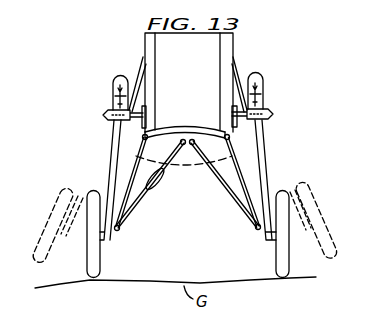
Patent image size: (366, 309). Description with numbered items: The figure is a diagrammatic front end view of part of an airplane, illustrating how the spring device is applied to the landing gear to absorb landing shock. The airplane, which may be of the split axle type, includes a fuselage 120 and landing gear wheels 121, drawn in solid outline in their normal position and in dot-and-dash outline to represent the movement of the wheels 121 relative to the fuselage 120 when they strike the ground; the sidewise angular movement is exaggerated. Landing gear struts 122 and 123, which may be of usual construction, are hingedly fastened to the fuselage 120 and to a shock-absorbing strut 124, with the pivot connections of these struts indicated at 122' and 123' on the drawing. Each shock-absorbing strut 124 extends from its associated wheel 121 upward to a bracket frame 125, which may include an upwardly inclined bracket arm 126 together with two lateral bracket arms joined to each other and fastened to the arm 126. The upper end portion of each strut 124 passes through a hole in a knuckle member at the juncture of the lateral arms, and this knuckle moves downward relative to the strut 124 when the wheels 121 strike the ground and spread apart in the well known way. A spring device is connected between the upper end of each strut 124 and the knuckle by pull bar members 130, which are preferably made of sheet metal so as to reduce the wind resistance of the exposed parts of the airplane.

The fuselage 120 is at (158, 199).
The landing gear wheel 121 is at (98, 268).
The landing gear strut 122 is at (170, 179).
The lower pivot 122' is at (188, 178).
The landing gear strut 123 is at (187, 148).
The central pivot 123' is at (174, 123).
The shock-absorbing strut 124 is at (115, 147).
The bracket frame 125 is at (118, 132).
The upwardly inclined bracket arm 126 is at (237, 70).
The pull bar member 130 is at (113, 100).